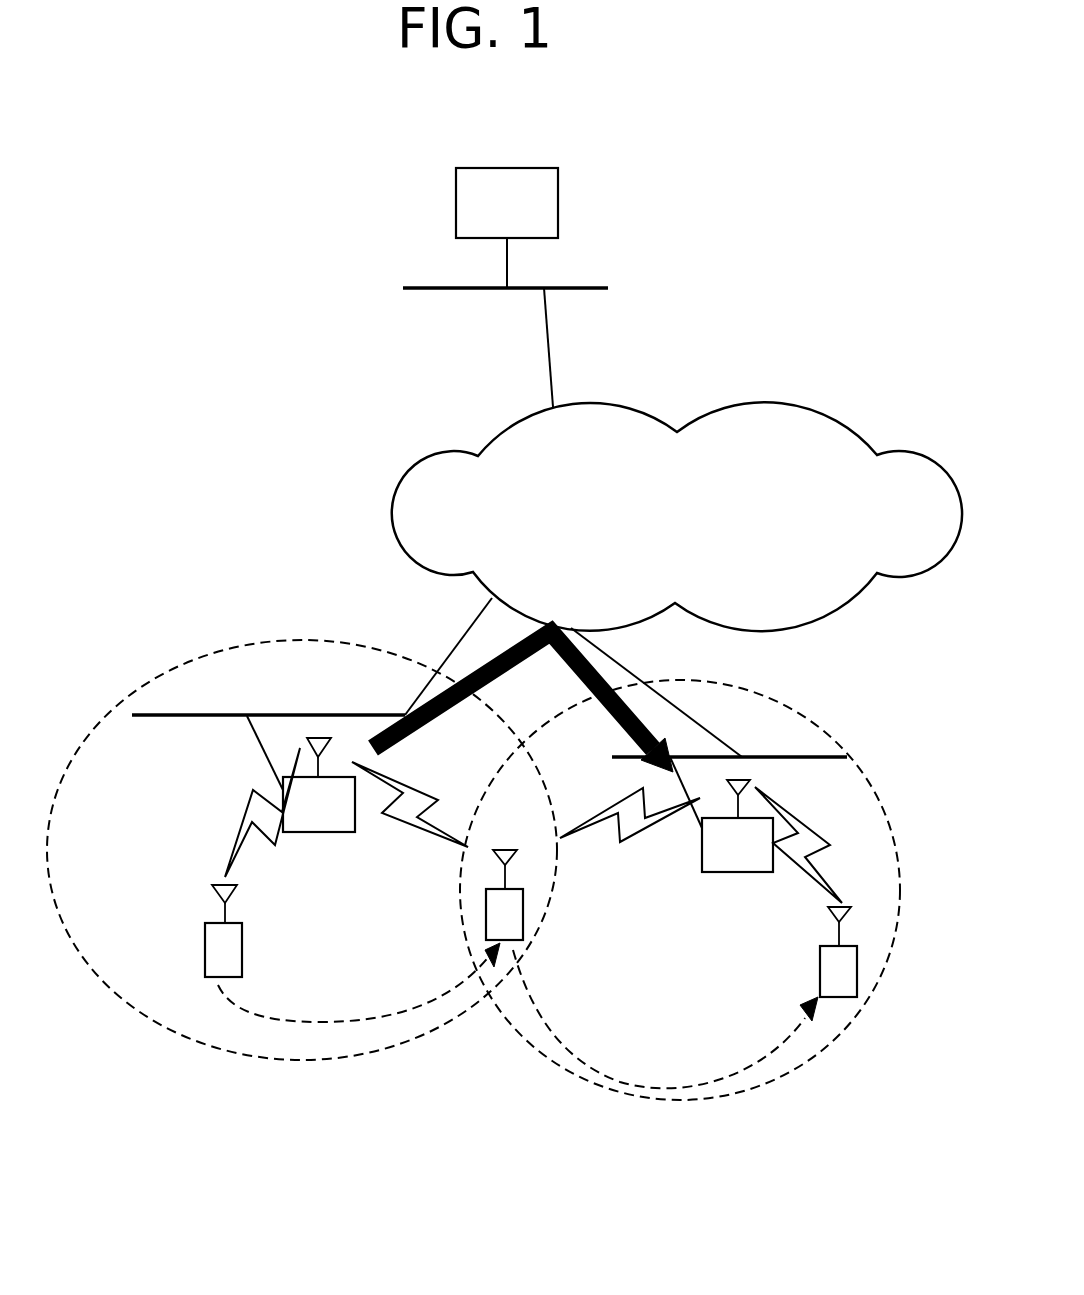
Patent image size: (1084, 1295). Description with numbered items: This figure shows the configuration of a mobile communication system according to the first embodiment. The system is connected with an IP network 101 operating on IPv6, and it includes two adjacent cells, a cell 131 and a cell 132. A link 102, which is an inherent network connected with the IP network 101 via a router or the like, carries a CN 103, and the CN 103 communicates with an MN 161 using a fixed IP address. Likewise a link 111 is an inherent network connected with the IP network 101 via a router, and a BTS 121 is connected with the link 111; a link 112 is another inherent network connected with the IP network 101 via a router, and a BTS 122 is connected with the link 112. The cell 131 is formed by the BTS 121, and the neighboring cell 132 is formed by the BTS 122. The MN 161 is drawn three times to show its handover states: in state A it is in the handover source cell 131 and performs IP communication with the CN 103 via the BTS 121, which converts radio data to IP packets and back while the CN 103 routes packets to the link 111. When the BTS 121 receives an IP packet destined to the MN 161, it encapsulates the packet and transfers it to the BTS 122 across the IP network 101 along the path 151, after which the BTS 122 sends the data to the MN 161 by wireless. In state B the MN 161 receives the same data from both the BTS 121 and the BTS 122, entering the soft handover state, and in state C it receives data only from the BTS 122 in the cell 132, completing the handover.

The IP network 101 is at (792, 407).
The link 102 is at (587, 287).
The CN 103 is at (558, 190).
The link 111 is at (240, 716).
The link 112 is at (790, 757).
The BTS 121 is at (315, 832).
The BTS 122 is at (715, 873).
The cell 131 is at (132, 1003).
The cell 132 is at (548, 1060).
The path 151 is at (490, 655).
The MN 161 is at (205, 932).